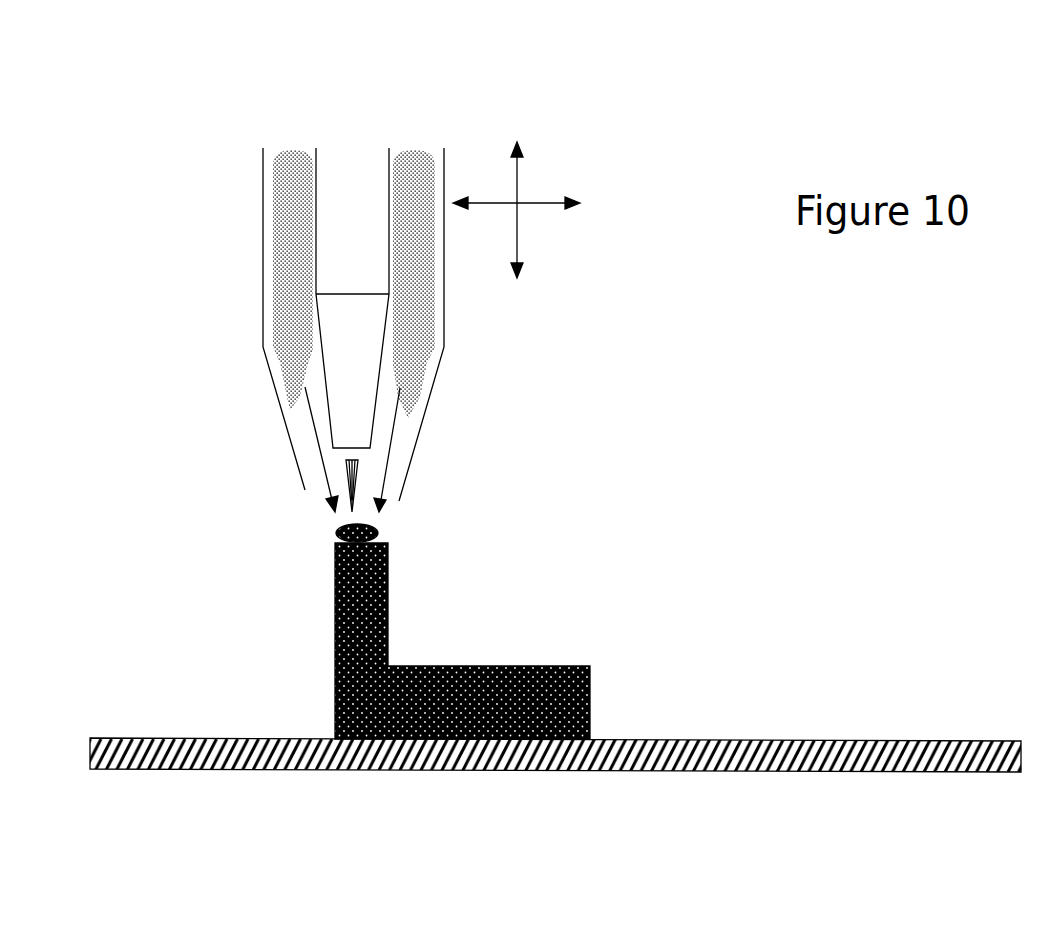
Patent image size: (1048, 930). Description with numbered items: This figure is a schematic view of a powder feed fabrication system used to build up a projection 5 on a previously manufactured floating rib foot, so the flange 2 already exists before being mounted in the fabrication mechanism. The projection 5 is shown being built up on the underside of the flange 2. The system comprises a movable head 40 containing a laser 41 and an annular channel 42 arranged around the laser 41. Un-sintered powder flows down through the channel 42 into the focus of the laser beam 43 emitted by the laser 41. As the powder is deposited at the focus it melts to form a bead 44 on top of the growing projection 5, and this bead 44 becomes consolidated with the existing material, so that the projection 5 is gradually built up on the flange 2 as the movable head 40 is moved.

The flange 2 is at (398, 757).
The projection 5 is at (443, 666).
The movable head 40 is at (200, 318).
The laser 41 is at (347, 347).
The annular channel 42 is at (422, 180).
The laser beam 43 is at (350, 470).
The bead 44 is at (378, 523).